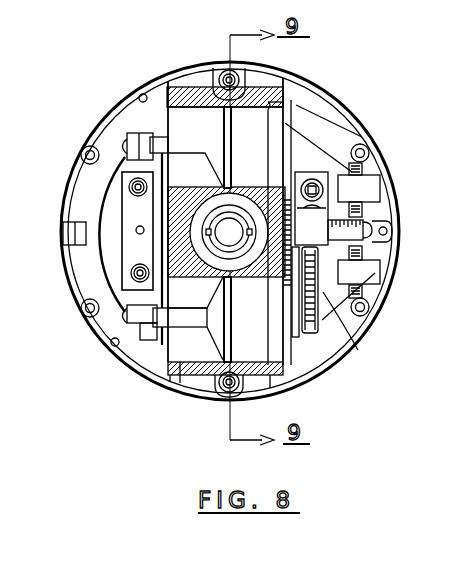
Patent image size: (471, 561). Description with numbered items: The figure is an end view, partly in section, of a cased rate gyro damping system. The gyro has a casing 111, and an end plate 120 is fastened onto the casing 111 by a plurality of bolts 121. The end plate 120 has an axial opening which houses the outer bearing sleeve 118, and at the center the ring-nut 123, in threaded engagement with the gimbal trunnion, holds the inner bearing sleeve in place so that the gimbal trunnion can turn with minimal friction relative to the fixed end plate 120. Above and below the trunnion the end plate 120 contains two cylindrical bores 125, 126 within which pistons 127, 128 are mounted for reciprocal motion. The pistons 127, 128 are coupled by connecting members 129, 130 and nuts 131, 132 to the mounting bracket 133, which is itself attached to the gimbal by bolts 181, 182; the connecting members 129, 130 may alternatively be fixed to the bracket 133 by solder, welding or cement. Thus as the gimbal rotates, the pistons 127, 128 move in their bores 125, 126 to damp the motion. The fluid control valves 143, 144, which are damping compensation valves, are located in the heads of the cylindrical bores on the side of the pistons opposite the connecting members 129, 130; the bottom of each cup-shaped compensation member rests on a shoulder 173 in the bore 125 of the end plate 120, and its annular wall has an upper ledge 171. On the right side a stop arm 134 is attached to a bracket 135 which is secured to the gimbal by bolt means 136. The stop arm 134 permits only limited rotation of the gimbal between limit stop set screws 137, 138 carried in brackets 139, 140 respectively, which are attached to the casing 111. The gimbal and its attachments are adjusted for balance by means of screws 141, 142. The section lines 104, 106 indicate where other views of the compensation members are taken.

The lower pointer 104 is at (284, 384).
The upper pointer 106 is at (285, 259).
The casing 111 is at (182, 382).
The outer bearing sleeve 118 is at (238, 213).
The end plate 120 is at (187, 209).
The bolts 121 is at (227, 396).
The ring-nut 123 is at (238, 246).
The cylindrical bore 125 is at (198, 187).
The cylindrical bore 126 is at (193, 278).
The piston 127 is at (223, 122).
The piston 128 is at (201, 345).
The connecting member 129 is at (171, 146).
The connecting member 130 is at (187, 316).
The nut 131 is at (133, 134).
The nut 132 is at (131, 331).
The mounting bracket 133 is at (153, 259).
The stop arm 134 is at (366, 228).
The bracket 135 is at (292, 192).
The bolt means 136 is at (311, 178).
The limit stop set screw 137 is at (364, 208).
The limit stop set screw 138 is at (364, 277).
The bracket 139 is at (357, 186).
The bracket 140 is at (369, 309).
The screw 141 is at (364, 252).
The screw 142 is at (358, 350).
The fluid control valve 143 is at (280, 118).
The fluid control valve 144 is at (294, 334).
The upper ledge 171 is at (313, 208).
The shoulder 173 is at (278, 115).
The bolt 181 is at (129, 188).
The bolt 182 is at (131, 273).